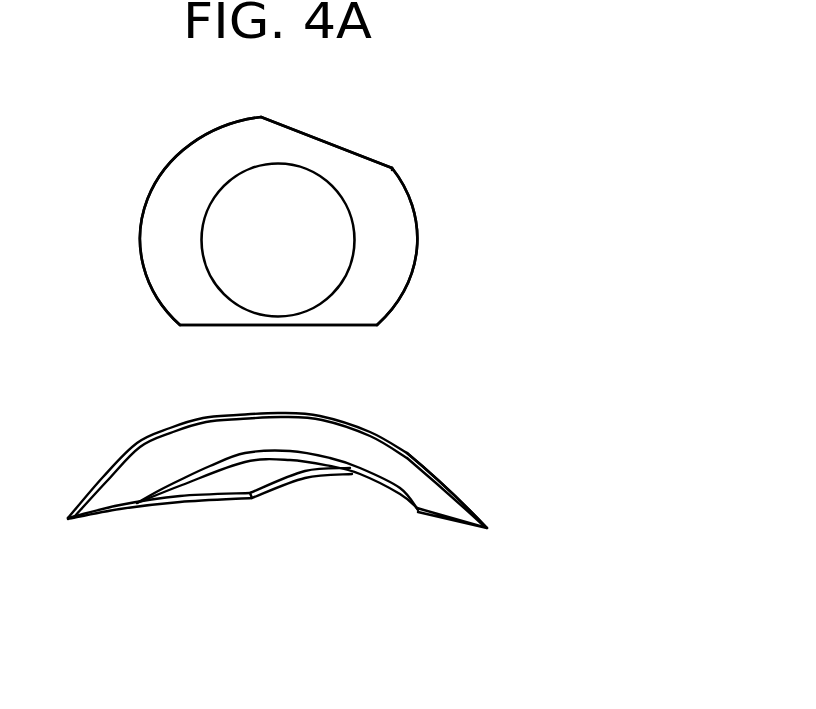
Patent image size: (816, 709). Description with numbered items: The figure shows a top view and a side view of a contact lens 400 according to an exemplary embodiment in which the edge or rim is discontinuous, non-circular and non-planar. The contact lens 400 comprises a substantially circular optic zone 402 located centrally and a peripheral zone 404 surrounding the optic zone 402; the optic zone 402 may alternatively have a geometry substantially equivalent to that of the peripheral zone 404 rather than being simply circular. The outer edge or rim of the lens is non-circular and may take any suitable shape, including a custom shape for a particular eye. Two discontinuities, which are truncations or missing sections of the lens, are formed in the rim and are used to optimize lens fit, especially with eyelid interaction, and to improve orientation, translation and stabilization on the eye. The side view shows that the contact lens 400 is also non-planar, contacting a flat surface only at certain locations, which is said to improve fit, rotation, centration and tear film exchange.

The contact lens 400 is at (100, 165).
The optic zone 402 is at (303, 234).
The peripheral zone 404 is at (408, 266).